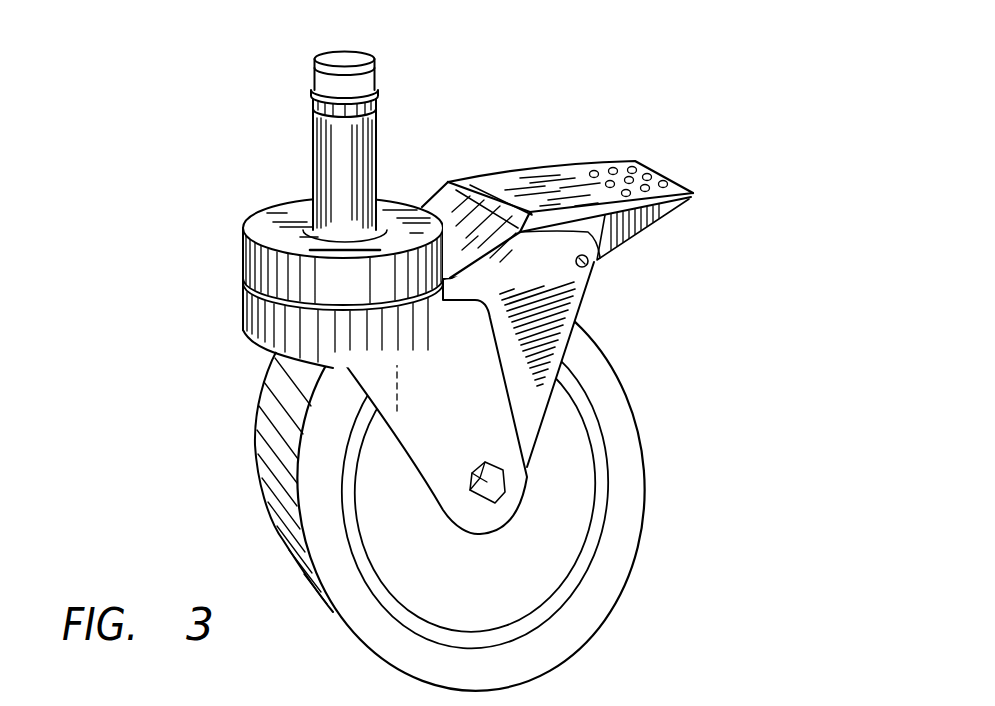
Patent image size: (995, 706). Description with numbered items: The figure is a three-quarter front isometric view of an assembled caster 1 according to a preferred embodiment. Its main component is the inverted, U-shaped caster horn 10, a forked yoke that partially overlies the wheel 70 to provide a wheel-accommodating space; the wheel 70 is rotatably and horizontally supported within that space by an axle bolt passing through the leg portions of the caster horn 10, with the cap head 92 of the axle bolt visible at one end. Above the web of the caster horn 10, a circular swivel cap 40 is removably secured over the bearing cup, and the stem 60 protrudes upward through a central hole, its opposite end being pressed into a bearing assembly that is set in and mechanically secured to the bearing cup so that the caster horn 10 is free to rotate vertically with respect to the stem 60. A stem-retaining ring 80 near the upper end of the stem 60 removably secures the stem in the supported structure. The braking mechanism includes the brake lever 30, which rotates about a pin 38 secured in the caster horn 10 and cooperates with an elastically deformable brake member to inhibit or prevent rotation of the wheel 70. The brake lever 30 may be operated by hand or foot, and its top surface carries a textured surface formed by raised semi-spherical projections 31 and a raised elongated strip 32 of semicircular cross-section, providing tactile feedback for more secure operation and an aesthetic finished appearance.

The caster 1 is at (217, 495).
The caster horn 10 is at (462, 418).
The brake lever 30 is at (545, 166).
The raised semi-spherical projection 31 is at (630, 167).
The raised elongated strip 32 is at (498, 182).
The pin 38 is at (588, 266).
The swivel cap 40 is at (243, 268).
The stem 60 is at (328, 140).
The wheel 70 is at (622, 458).
The stem-retaining ring 80 is at (313, 93).
The cap head 92 is at (493, 497).